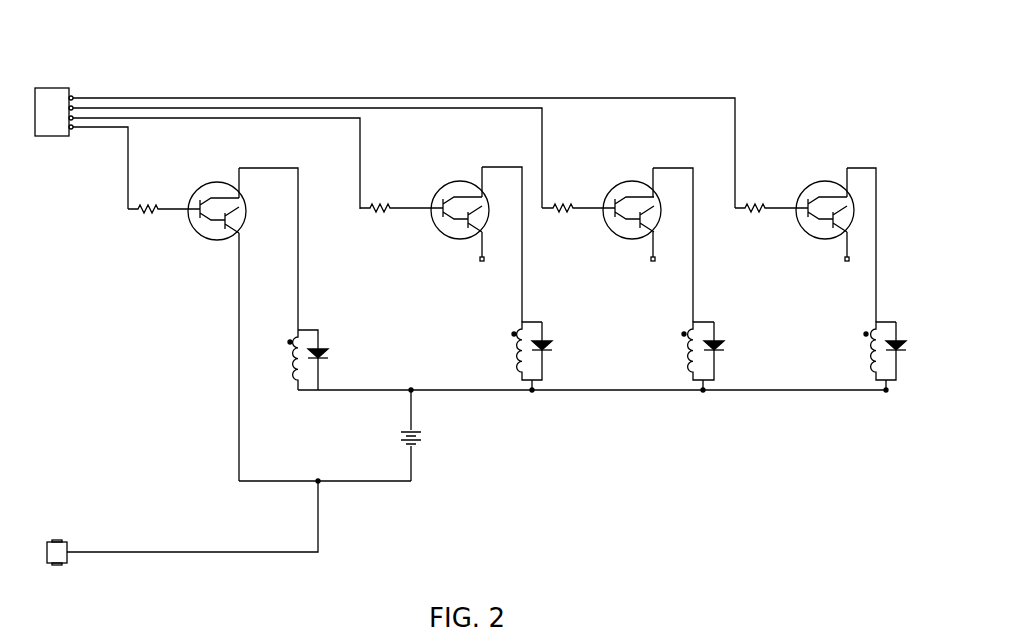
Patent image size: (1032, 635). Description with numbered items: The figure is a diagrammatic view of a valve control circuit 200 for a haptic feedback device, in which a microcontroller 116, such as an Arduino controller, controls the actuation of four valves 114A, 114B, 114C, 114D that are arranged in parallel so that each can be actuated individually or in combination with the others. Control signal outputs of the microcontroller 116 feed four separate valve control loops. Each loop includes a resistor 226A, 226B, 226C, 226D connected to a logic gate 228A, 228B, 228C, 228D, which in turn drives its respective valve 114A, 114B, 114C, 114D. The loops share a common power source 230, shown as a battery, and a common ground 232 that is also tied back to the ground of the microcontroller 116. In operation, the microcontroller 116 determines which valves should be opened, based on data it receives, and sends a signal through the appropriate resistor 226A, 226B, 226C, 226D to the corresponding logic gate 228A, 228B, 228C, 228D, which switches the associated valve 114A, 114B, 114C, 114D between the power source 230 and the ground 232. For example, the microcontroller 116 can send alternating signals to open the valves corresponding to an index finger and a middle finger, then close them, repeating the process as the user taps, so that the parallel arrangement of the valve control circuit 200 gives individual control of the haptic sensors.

The valve control circuit 200 is at (345, 78).
The microcontroller 116 is at (62, 85).
The resistor 226A is at (158, 219).
The resistor 226B is at (395, 218).
The resistor 226C is at (572, 218).
The resistor 226D is at (765, 219).
The logic gate 228A is at (212, 192).
The logic gate 228B is at (452, 190).
The logic gate 228C is at (625, 188).
The logic gate 228D is at (820, 190).
The valve 114A is at (329, 360).
The valve 114B is at (551, 356).
The valve 114C is at (722, 356).
The valve 114D is at (871, 353).
The power source 230 is at (345, 435).
The ground 232 is at (444, 420).